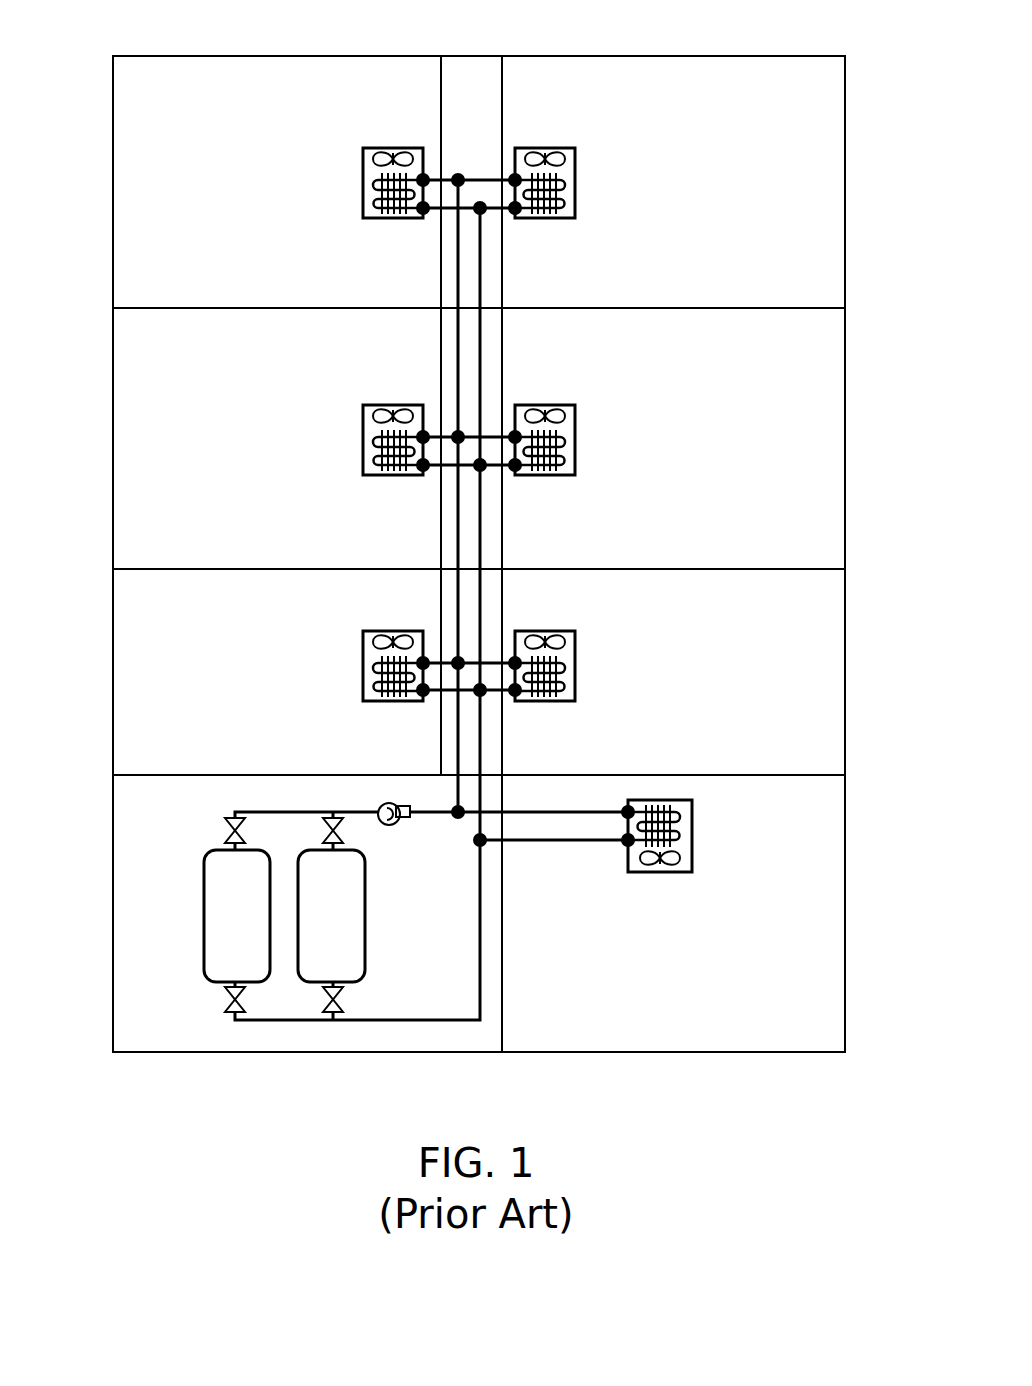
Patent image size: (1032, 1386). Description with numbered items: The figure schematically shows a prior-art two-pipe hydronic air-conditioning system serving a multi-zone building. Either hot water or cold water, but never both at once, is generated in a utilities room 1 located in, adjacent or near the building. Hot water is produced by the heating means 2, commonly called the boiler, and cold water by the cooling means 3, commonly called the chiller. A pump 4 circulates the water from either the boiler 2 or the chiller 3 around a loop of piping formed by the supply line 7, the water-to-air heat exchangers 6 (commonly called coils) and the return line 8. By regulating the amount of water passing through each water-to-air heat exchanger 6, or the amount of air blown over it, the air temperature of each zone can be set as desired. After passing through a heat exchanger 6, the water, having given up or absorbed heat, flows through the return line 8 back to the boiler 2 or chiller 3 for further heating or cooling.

The utilities room 1 is at (297, 1052).
The heating means 2 is at (230, 955).
The cooling means 3 is at (327, 952).
The pump 4 is at (373, 807).
The water-to-air heat exchanger 6 is at (363, 218).
The supply line 7 is at (433, 817).
The return line 8 is at (453, 1023).